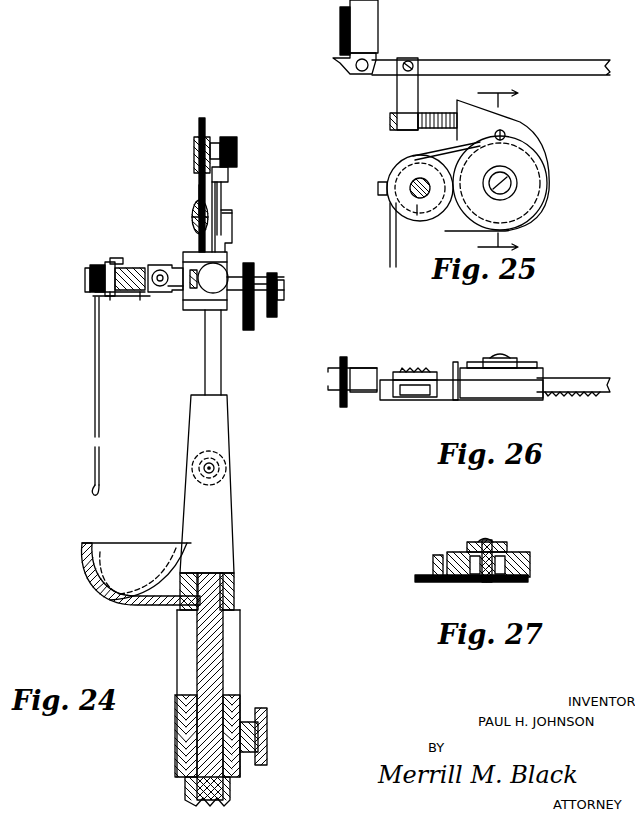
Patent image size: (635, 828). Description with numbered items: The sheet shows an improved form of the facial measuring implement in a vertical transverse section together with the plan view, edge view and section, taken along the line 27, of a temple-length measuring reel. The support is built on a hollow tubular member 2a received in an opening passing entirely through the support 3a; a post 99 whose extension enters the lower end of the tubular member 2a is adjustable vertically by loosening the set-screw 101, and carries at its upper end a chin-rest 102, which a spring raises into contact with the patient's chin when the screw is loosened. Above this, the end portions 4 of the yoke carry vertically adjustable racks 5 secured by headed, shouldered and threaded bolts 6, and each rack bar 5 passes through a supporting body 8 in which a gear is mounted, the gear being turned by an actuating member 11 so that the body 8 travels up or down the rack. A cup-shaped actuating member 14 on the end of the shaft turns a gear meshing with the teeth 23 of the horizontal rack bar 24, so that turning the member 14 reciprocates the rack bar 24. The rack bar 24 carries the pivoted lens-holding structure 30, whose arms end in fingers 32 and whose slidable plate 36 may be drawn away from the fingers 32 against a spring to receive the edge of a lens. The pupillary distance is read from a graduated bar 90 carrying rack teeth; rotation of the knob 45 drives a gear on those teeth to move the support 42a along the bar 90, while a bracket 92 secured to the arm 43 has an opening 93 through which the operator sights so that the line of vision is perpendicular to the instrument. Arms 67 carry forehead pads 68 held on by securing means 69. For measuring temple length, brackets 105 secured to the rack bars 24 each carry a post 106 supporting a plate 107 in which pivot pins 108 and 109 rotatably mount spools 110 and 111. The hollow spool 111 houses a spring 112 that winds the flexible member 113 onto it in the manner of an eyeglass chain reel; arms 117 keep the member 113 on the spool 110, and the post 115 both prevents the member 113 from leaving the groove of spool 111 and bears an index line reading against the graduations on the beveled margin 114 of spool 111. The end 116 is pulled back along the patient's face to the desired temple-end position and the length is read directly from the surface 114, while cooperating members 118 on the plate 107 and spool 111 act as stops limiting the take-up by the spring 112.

In FIG. 24, the tubular support member 2a is at (186, 784).
In FIG. 24, the support 3a is at (176, 731).
In FIG. 24, the end portions of the yoke 4 is at (222, 509).
In FIG. 24, the rack bar 5 is at (222, 373).
In FIG. 24, the bolt 6 is at (230, 466).
In FIG. 24, the supporting body 8 is at (200, 305).
In FIG. 24, the actuating member 11 is at (256, 318).
In FIG. 24, the actuating member for the shaft 14 is at (284, 284).
In FIG. 26, the teeth of the rack bar 23 is at (594, 397).
In FIG. 25, the rack bar 24 is at (508, 60).
In FIG. 26, the rack bar 24 is at (366, 368).
In FIG. 25, the section line 27 is at (510, 171).
In FIG. 25, the lens-holding structure 30 is at (370, 25).
In FIG. 24, the fingers 32 is at (185, 268).
In FIG. 25, the fingers 32 is at (338, 69).
In FIG. 26, the fingers 32 is at (335, 368).
In FIG. 24, the plate 36 is at (220, 272).
In FIG. 25, the plate 36 is at (340, 36).
In FIG. 26, the plate 36 is at (344, 357).
In FIG. 24, the support 42a is at (210, 140).
In FIG. 24, the arm 43 is at (222, 190).
In FIG. 24, the knob 45 is at (237, 150).
In FIG. 24, the arms 67 is at (198, 200).
In FIG. 24, the pads 68 is at (194, 205).
In FIG. 24, the securing means 69 is at (192, 217).
In FIG. 24, the graduated bar 90 is at (204, 122).
In FIG. 24, the bracket 92 is at (233, 232).
In FIG. 24, the opening 93 is at (241, 223).
In FIG. 24, the post 99 is at (210, 651).
In FIG. 24, the set-screw 101 is at (268, 741).
In FIG. 24, the chin-rest 102 is at (90, 576).
In FIG. 24, the bracket 105 is at (158, 270).
In FIG. 25, the bracket 105 is at (400, 93).
In FIG. 24, the post 106 is at (157, 293).
In FIG. 25, the post 106 is at (392, 123).
In FIG. 24, the plate 107 is at (92, 297).
In FIG. 25, the plate 107 is at (520, 129).
In FIG. 26, the plate 107 is at (470, 400).
In FIG. 27, the plate 107 is at (515, 585).
In FIG. 24, the pivot pin 108 is at (106, 268).
In FIG. 25, the pivot pin 108 is at (412, 182).
In FIG. 26, the pivot pin 108 is at (420, 372).
In FIG. 24, the pivot pin 109 is at (114, 258).
In FIG. 25, the pivot pin 109 is at (510, 182).
In FIG. 26, the pivot pin 109 is at (503, 358).
In FIG. 27, the pivot pin 109 is at (490, 540).
In FIG. 24, the spool 110 is at (92, 293).
In FIG. 25, the spool 110 is at (417, 206).
In FIG. 26, the spool 110 is at (420, 397).
In FIG. 24, the spool 111 is at (90, 278).
In FIG. 25, the spool 111 is at (520, 191).
In FIG. 26, the spool 111 is at (520, 362).
In FIG. 27, the spool 111 is at (505, 557).
In FIG. 27, the spring 112 is at (480, 584).
In FIG. 24, the flexible member 113 is at (100, 378).
In FIG. 25, the flexible member 113 is at (389, 250).
In FIG. 26, the flexible member 113 is at (390, 395).
In FIG. 24, the beveled margin 114 is at (88, 268).
In FIG. 25, the beveled margin 114 is at (538, 201).
In FIG. 26, the beveled margin 114 is at (530, 368).
In FIG. 27, the beveled margin 114 is at (522, 553).
In FIG. 24, the post 115 is at (118, 256).
In FIG. 25, the post 115 is at (505, 136).
In FIG. 27, the post 115 is at (432, 563).
In FIG. 24, the end of the flexible member 116 is at (101, 489).
In FIG. 24, the arms 117 is at (112, 296).
In FIG. 25, the arms 117 is at (420, 155).
In FIG. 24, the cooperating stop members 118 is at (139, 297).
In FIG. 27, the cooperating stop members 118 is at (450, 583).